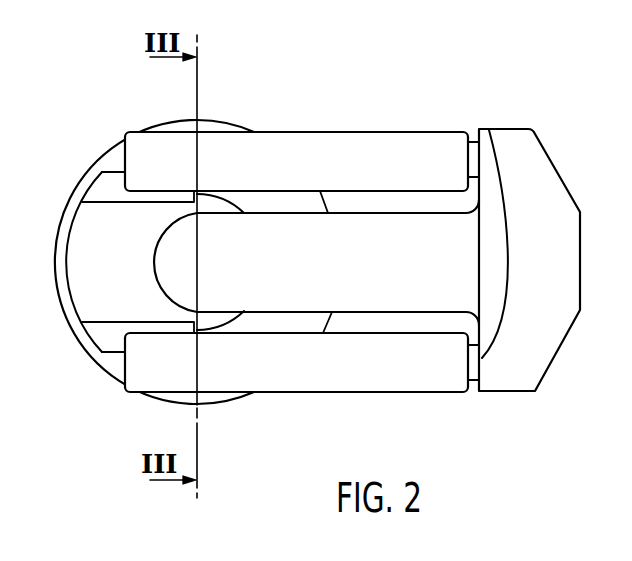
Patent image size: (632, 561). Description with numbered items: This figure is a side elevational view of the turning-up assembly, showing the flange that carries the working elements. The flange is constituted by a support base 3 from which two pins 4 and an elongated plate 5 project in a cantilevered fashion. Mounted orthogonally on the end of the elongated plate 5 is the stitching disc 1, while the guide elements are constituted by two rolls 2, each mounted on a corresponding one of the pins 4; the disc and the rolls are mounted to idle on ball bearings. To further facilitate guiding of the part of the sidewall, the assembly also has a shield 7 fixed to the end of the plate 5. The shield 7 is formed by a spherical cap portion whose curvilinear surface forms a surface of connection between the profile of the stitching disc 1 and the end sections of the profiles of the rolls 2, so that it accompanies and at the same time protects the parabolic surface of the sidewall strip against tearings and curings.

The stitching disc 1 is at (112, 157).
The rolls 2 is at (345, 352).
The support base 3 is at (515, 210).
The pins 4 is at (475, 152).
The elongated plate 5 is at (437, 252).
The shield 7 is at (150, 230).